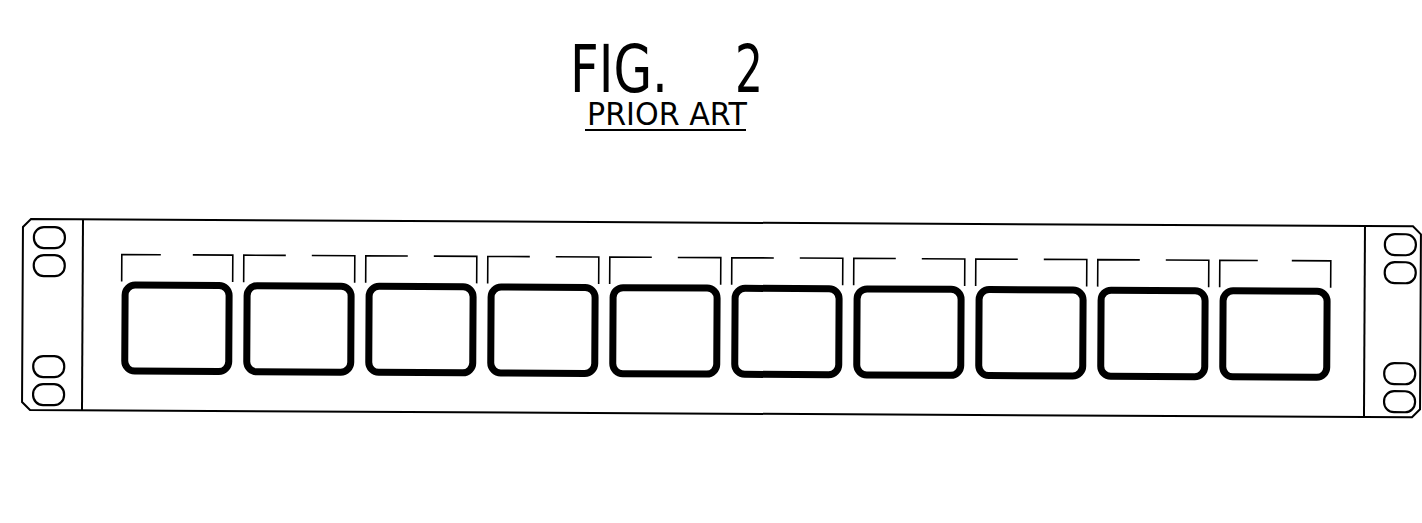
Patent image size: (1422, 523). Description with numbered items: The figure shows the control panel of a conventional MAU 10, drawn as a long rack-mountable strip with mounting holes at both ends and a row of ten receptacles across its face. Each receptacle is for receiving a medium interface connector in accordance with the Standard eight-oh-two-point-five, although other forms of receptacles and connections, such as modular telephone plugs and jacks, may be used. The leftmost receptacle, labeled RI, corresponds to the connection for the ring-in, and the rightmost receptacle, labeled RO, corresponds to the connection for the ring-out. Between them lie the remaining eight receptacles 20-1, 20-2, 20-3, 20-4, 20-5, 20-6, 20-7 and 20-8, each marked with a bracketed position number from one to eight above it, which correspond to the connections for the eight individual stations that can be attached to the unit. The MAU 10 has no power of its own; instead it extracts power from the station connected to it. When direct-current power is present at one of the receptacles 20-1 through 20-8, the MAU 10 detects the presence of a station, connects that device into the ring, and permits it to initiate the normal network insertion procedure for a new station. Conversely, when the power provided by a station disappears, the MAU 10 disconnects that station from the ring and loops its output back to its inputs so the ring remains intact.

The MAU 10 is at (721, 359).
The receptacle 20-1 is at (264, 347).
The receptacle 20-2 is at (386, 347).
The receptacle 20-3 is at (508, 347).
The receptacle 20-4 is at (630, 347).
The receptacle 20-5 is at (752, 347).
The receptacle 20-6 is at (874, 347).
The receptacle 20-7 is at (996, 347).
The receptacle 20-8 is at (1118, 347).